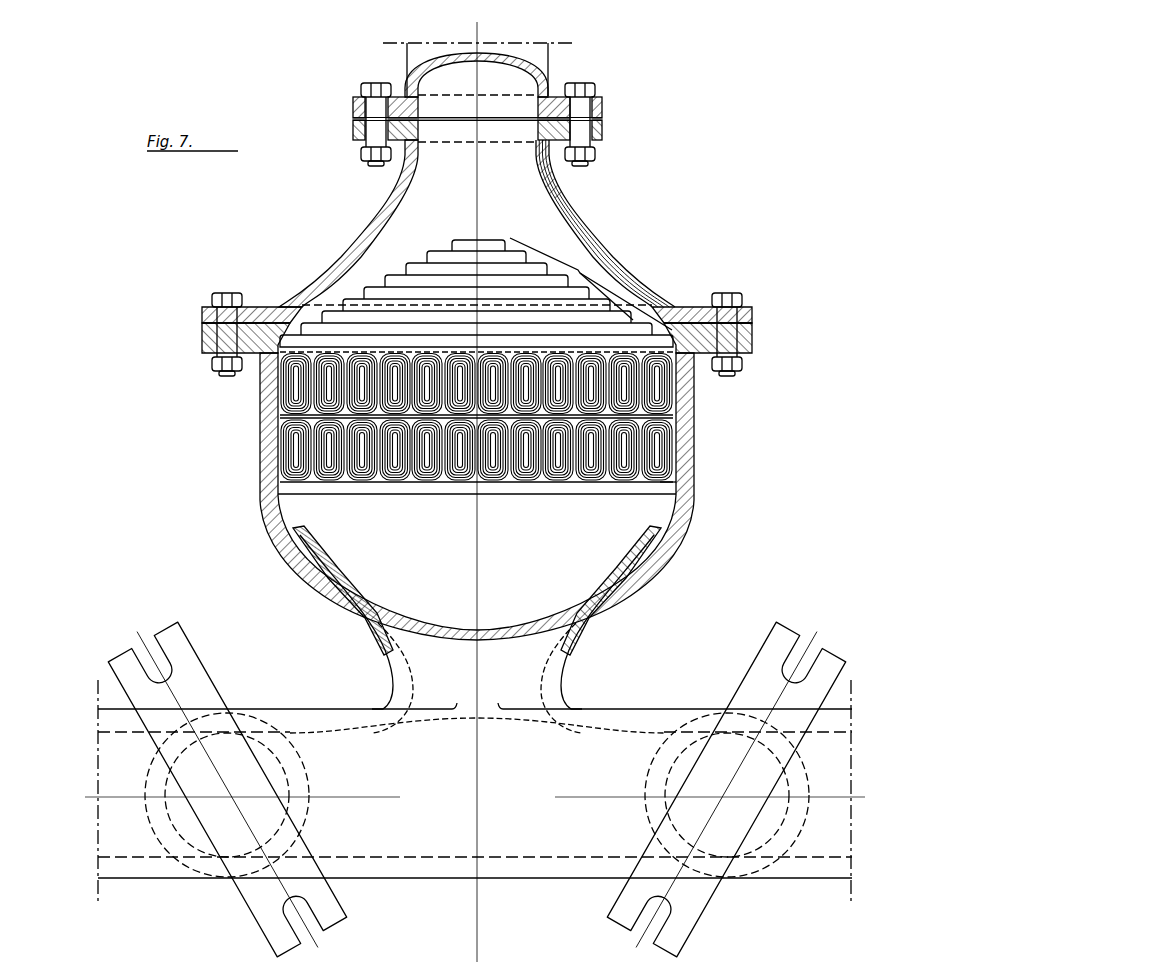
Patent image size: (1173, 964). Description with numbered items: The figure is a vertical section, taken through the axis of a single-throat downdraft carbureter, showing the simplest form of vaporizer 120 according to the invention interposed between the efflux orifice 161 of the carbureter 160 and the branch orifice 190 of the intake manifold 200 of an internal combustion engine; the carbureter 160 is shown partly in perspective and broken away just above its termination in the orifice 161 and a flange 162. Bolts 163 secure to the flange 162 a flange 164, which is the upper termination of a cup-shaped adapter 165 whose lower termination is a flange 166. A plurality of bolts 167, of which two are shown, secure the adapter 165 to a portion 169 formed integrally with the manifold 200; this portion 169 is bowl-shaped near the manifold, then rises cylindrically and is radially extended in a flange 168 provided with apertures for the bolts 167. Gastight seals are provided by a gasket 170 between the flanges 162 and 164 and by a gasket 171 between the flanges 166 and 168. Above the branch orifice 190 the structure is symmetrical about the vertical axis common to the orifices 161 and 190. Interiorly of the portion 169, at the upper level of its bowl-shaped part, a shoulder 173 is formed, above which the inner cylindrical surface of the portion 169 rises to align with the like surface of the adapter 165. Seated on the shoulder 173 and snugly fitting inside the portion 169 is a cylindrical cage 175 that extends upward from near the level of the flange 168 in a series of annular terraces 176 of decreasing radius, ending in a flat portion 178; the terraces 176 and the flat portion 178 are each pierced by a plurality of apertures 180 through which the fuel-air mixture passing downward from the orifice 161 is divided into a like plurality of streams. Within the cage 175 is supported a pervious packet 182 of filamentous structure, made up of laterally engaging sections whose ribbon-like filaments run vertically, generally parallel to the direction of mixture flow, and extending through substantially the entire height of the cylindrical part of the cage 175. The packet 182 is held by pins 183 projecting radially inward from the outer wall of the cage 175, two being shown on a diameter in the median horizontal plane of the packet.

The vaporizer 120 is at (300, 272).
The carbureter 160 is at (400, 50).
The efflux orifice 161 is at (493, 116).
The flange 162 is at (355, 104).
The bolts 163 is at (375, 88).
The flange 164 is at (355, 136).
The cup-shaped adapter 165 is at (360, 225).
The flange 166 is at (205, 312).
The bolts 167 is at (227, 310).
The flange 168 is at (205, 343).
The portion 169 is at (265, 478).
The gasket 170 is at (355, 119).
The gasket 171 is at (205, 326).
The shoulder 173 is at (282, 496).
The cylindrical cage 175 is at (670, 486).
The annular terraces 176 is at (591, 284).
The flat portion 178 is at (455, 240).
The apertures 180 is at (378, 275).
The pervious packet 182 is at (545, 484).
The pins 183 is at (300, 420).
The branch orifice 190 is at (487, 720).
The intake manifold 200 is at (360, 722).